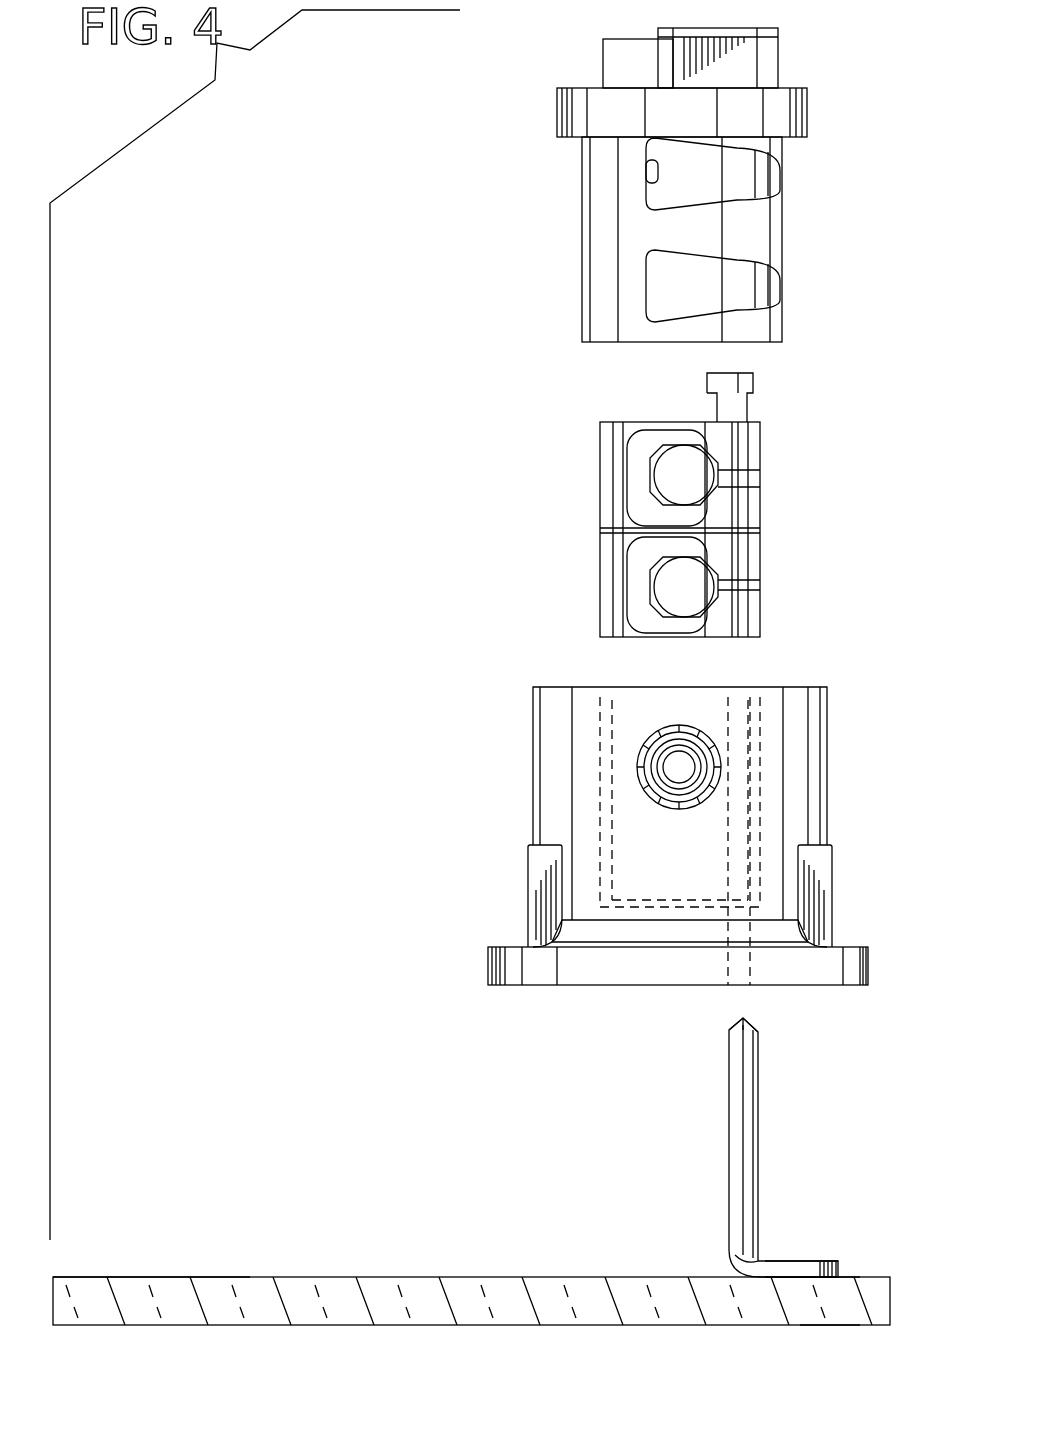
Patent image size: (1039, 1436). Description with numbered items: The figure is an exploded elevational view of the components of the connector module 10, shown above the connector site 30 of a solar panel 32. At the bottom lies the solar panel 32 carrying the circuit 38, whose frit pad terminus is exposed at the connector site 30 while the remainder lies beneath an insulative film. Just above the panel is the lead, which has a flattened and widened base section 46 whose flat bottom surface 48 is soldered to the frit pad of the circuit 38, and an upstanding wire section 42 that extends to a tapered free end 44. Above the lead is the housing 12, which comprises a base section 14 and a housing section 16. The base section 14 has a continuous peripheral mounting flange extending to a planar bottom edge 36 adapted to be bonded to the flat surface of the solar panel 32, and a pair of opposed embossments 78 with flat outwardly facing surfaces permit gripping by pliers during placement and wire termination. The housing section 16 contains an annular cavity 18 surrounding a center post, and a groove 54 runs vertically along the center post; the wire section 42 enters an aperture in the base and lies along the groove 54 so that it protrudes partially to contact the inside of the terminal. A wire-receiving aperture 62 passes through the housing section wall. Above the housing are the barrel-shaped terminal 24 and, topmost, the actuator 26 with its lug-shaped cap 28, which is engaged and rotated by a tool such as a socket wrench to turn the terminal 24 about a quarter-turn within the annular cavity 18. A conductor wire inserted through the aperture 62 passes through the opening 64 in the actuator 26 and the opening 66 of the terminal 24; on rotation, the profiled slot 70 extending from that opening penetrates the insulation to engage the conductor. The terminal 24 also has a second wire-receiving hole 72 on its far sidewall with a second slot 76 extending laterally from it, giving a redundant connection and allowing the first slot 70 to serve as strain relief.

The connector module 10 is at (415, 467).
The housing 12 is at (526, 757).
The base section 14 is at (507, 965).
The housing section 16 is at (553, 815).
The annular cavity 18 is at (750, 710).
The barrel-shaped terminal 24 is at (758, 540).
The actuator 26 is at (608, 270).
The lug-shaped cap 28 is at (623, 62).
The connector site 30 is at (650, 1277).
The solar panel 32 is at (197, 1265).
The planar bottom edge 36 is at (543, 988).
The circuit 38 is at (843, 1277).
The wire section 42 is at (745, 1088).
The free end 44 is at (747, 1025).
The base section 46 is at (788, 1263).
The flat bottom surface 48 is at (818, 1278).
The groove 54 is at (727, 777).
The wire-receiving aperture 62 is at (653, 755).
The opening 64 is at (650, 183).
The opening 66 is at (656, 490).
The profiled slot 70 is at (757, 473).
The second wire-receiving hole 72 is at (648, 482).
The second slot 76 is at (628, 468).
The embossments 78 is at (812, 858).